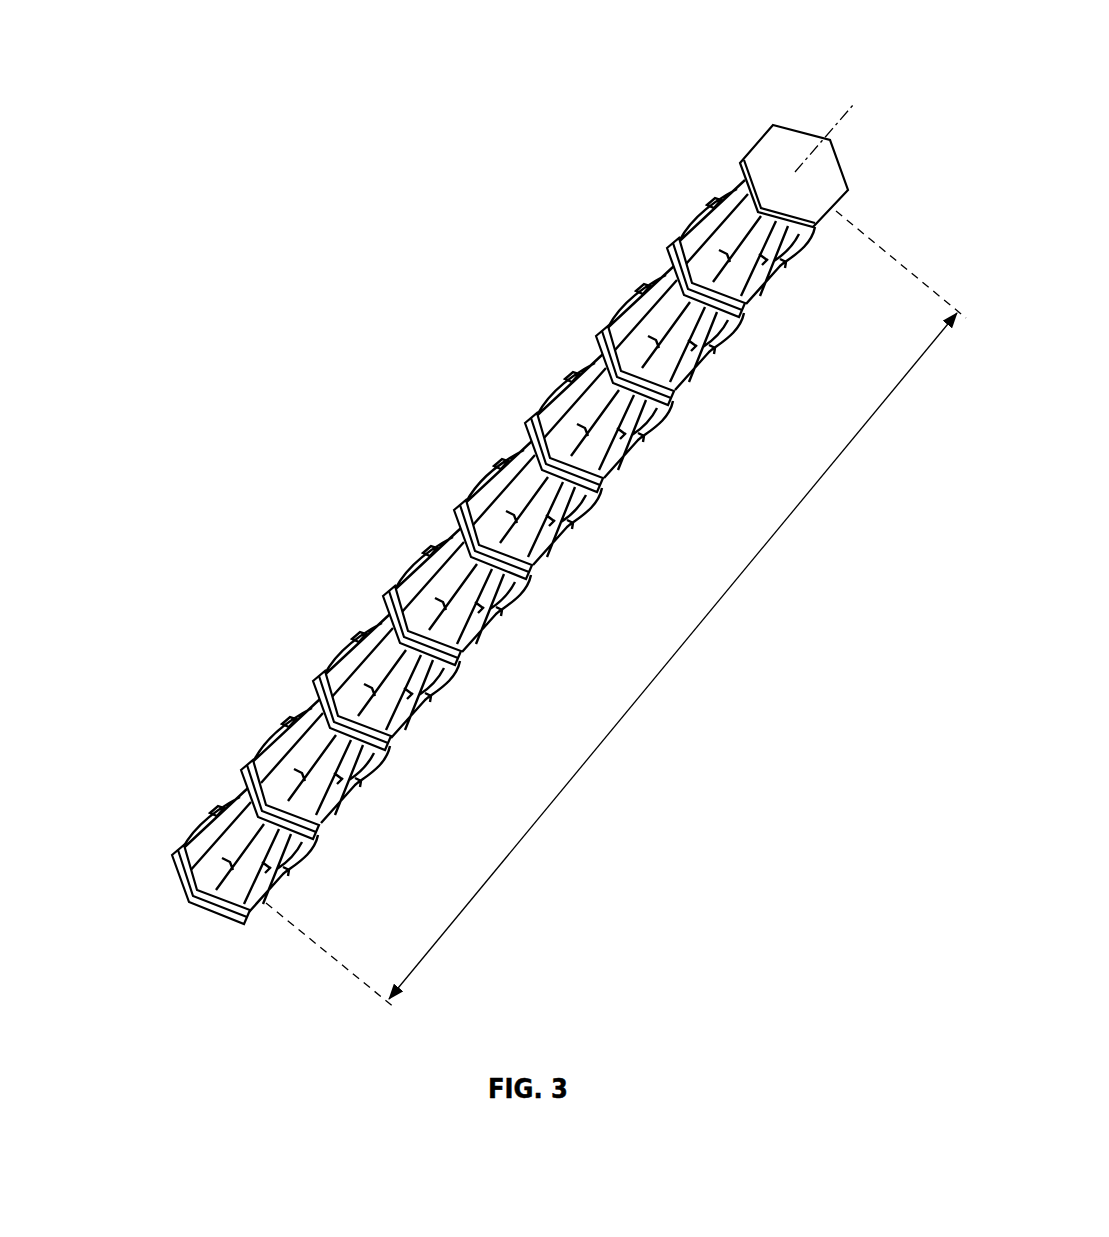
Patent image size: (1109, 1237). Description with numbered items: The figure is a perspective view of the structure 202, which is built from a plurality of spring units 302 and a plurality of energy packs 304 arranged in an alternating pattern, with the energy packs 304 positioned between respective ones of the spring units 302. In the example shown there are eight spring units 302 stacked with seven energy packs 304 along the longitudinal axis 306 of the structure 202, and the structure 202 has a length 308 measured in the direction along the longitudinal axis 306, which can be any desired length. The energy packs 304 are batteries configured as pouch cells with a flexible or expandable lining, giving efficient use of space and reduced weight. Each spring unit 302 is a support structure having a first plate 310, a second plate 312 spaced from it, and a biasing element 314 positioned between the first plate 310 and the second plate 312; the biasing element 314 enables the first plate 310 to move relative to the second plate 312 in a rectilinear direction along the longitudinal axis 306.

The structure 202 is at (350, 72).
The spring units 302 is at (499, 546).
The energy packs 304 is at (673, 260).
The longitudinal axis 306 is at (842, 112).
The length 308 is at (678, 650).
The first plates 310 is at (847, 180).
The second plates 312 is at (749, 290).
The biasing elements 314 is at (763, 284).